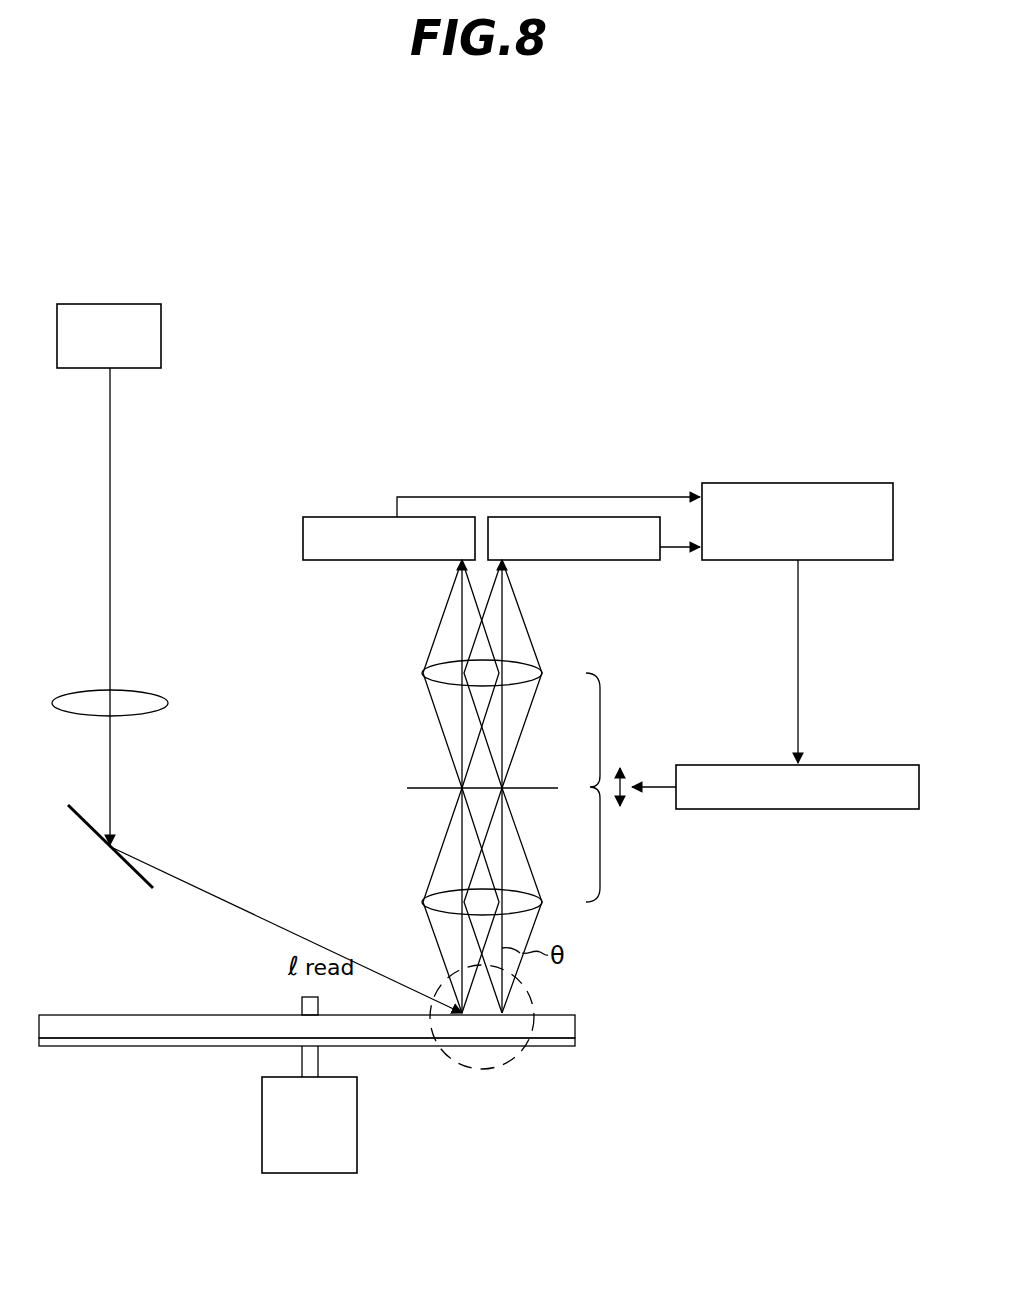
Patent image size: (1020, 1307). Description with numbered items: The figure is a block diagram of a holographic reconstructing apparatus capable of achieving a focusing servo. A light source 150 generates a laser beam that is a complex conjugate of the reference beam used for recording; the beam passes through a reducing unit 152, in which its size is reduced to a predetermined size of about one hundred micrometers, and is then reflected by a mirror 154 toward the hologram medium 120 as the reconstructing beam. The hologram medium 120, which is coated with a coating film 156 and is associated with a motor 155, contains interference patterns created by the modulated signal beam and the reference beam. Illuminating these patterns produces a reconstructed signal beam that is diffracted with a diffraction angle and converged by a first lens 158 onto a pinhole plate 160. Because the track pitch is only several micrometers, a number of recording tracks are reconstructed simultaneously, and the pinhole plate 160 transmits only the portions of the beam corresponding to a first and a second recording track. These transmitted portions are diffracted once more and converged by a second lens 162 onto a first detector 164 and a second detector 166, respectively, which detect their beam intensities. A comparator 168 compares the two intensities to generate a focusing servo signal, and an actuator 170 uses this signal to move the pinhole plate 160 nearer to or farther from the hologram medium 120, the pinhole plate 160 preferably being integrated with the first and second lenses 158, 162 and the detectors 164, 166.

The hologram medium 120 is at (576, 1022).
The light source 150 is at (162, 337).
The reducing unit 152 is at (168, 700).
The mirror 154 is at (82, 820).
The motor 155 is at (262, 1126).
The coating film 156 is at (576, 1042).
The first lens 158 is at (523, 890).
The pinhole plate 160 is at (418, 788).
The second lens 162 is at (523, 685).
The first detector 164 is at (342, 562).
The second detector 166 is at (602, 562).
The comparator 168 is at (833, 483).
The actuator 170 is at (858, 765).